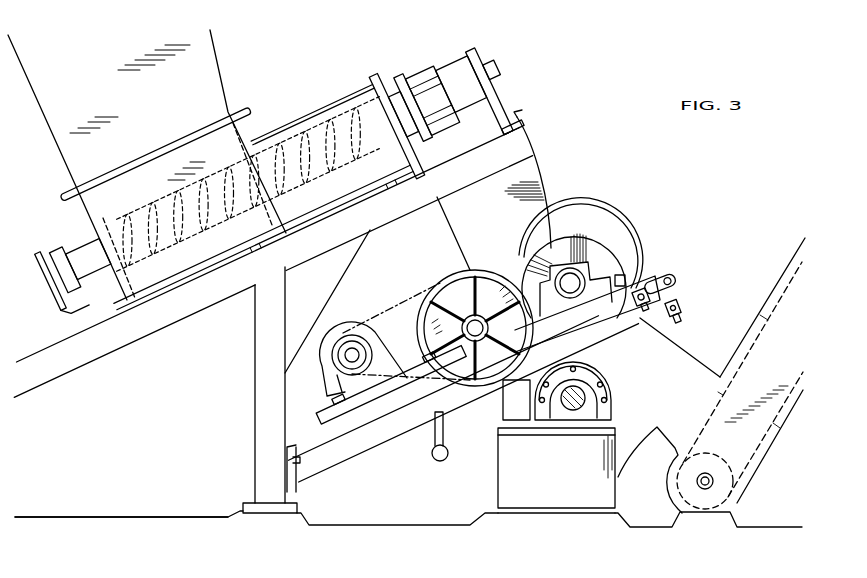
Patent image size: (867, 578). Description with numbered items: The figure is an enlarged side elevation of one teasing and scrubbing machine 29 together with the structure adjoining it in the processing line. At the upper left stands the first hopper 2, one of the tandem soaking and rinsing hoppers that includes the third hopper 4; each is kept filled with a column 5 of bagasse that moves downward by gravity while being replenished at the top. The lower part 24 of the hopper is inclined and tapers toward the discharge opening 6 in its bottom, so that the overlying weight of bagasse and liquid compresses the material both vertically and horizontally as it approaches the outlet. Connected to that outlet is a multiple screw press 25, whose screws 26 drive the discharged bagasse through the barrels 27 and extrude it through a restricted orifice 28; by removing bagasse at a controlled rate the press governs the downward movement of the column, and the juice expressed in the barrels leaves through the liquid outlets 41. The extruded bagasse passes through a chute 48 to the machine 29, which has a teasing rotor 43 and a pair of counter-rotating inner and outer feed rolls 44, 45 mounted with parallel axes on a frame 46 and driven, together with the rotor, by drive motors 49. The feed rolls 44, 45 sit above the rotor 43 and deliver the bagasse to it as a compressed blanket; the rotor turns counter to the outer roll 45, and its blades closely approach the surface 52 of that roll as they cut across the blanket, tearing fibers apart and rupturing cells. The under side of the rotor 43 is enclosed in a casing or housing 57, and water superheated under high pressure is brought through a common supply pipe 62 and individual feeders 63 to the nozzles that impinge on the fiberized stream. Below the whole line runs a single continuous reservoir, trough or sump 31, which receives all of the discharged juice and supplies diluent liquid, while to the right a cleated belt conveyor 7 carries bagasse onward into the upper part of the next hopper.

The first hopper 2 is at (216, 52).
The lower part of hopper 24 is at (222, 72).
The discharge opening 6 is at (162, 148).
The screws 26 is at (148, 208).
The barrels 27 is at (305, 125).
The multiple screw press 25 is at (376, 78).
The restricted orifice 28 is at (396, 83).
The chute 48 is at (545, 182).
The third hopper 4 is at (567, 187).
The column of bagasse 5 is at (503, 257).
The surface of outer roll 52 is at (573, 262).
The teasing and scrubbing machine 29 is at (615, 242).
The outer feed roll 45 is at (616, 268).
The frame 46 is at (370, 449).
The drive motors 49 is at (343, 327).
The inner feed roll 44 is at (458, 284).
The liquid outlets 41 is at (311, 306).
The teasing rotor 43 is at (615, 372).
The casing or housing 57 is at (622, 472).
The reservoir, trough or sump 31 is at (85, 530).
The individual feeders 63 is at (446, 434).
The common supply pipe 62 is at (449, 453).
The conveyor 7 is at (772, 317).